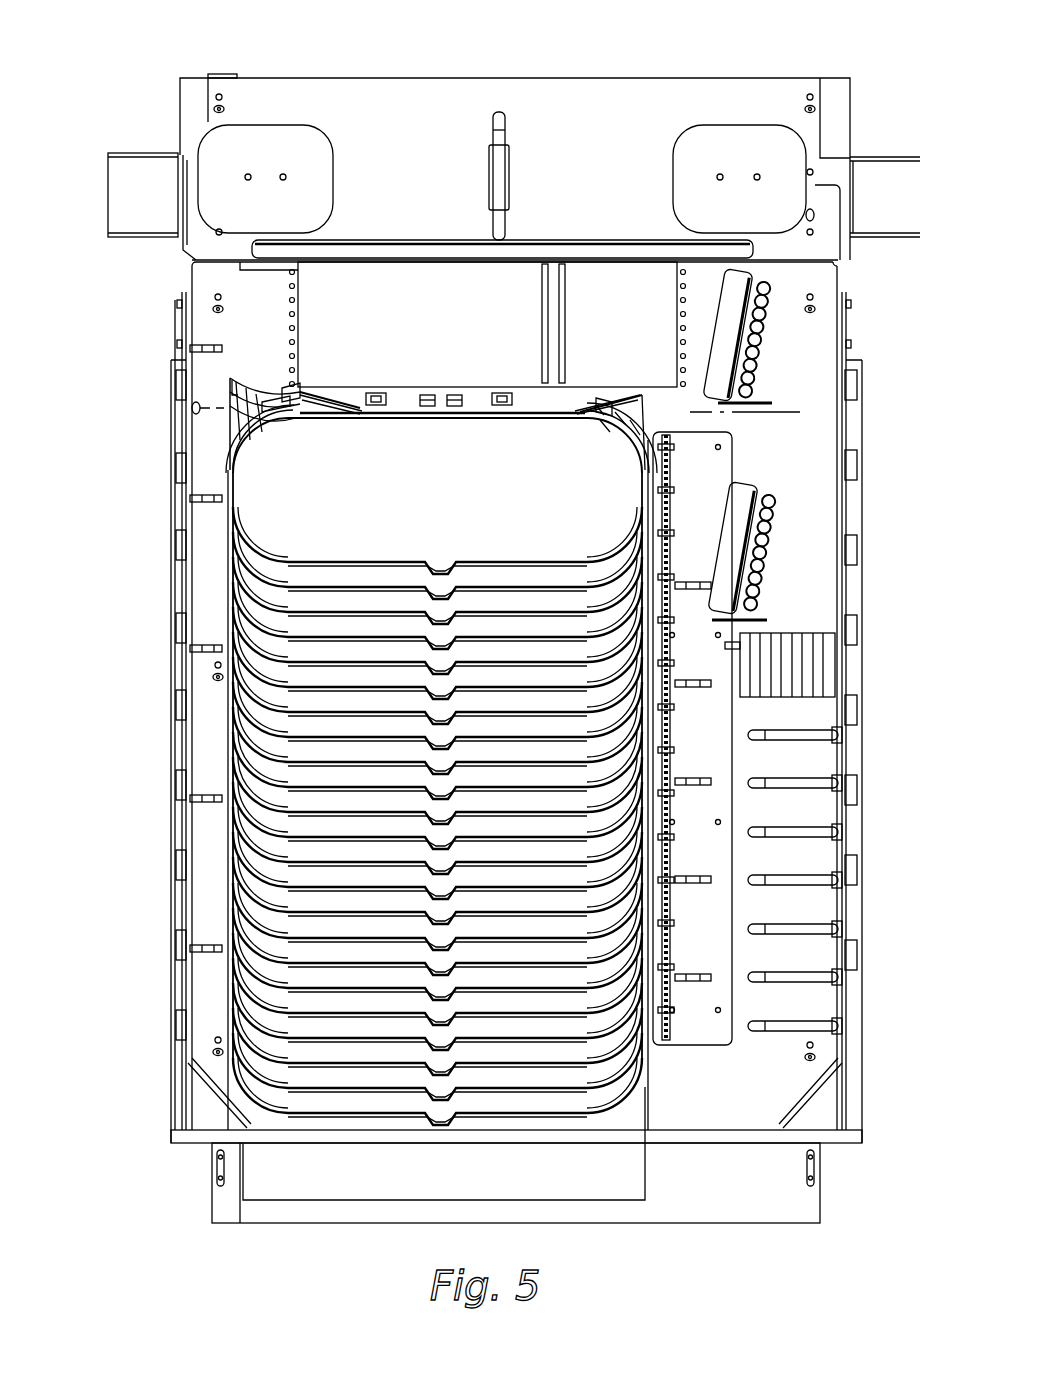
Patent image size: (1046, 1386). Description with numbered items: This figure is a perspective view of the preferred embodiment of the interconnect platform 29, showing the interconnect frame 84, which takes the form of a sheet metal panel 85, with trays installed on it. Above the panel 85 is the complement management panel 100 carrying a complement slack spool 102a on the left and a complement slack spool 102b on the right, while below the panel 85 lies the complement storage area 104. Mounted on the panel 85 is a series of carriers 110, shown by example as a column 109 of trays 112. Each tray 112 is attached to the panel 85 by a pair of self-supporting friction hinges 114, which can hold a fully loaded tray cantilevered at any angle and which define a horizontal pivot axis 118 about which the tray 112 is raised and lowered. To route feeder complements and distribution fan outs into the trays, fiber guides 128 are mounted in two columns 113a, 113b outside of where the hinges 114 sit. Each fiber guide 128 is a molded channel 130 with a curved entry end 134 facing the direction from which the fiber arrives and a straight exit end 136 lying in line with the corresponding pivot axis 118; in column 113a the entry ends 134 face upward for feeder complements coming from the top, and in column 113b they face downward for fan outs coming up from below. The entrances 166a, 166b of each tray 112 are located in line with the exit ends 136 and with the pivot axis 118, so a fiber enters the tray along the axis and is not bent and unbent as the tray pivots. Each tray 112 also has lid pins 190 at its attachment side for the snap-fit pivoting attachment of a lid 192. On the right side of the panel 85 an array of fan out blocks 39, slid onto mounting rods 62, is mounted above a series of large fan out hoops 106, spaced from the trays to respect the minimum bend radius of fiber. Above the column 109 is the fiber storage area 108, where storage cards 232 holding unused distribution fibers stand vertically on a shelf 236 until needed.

The interconnect platform 29 is at (160, 1066).
The fan out block 39 is at (825, 680).
The mounting rod 62 is at (725, 645).
The interconnect frame 84 is at (835, 490).
The sheet metal panel 85 is at (692, 764).
The complement management panel 100 is at (588, 98).
The complement slack spool 102a is at (288, 138).
The complement slack spool 102b is at (765, 140).
The complement storage area 104 is at (632, 1185).
The fan out hoop 106 is at (830, 790).
The fiber storage area 108 is at (383, 258).
The column of trays 109 is at (381, 1144).
The carrier 110 is at (500, 1105).
The tray 112 is at (670, 560).
The column of fiber guides 113a is at (226, 422).
The column of fiber guides 113b is at (655, 425).
The hinge 114 is at (378, 403).
The pivot axis 118 is at (782, 412).
The fiber guide 128 is at (250, 398).
The channel 130 is at (266, 400).
The entry end 134 is at (236, 395).
The exit end 136 is at (286, 402).
The entrance 166a is at (300, 394).
The entrance 166b is at (590, 398).
The lid pin 190 is at (428, 406).
The lid 192 is at (460, 410).
The storage card 232 is at (562, 264).
The shelf 236 is at (370, 385).